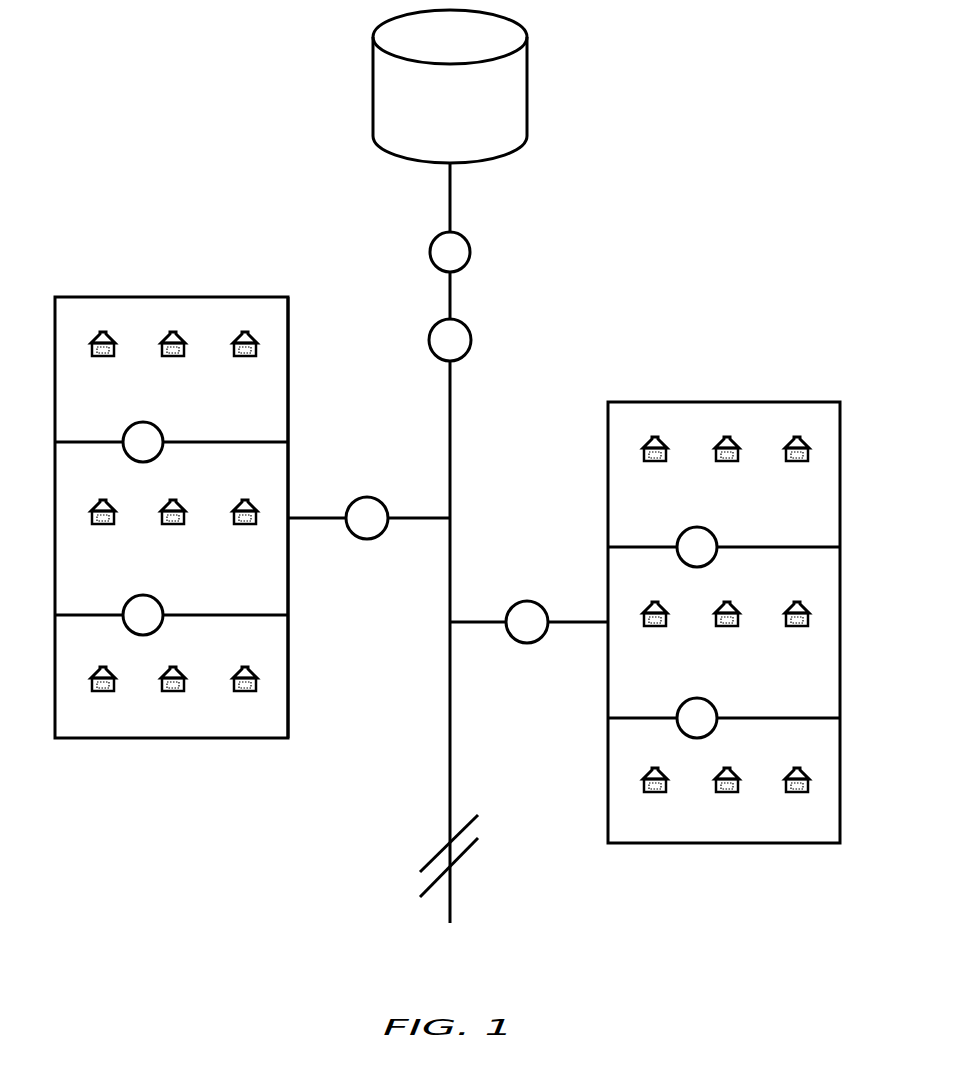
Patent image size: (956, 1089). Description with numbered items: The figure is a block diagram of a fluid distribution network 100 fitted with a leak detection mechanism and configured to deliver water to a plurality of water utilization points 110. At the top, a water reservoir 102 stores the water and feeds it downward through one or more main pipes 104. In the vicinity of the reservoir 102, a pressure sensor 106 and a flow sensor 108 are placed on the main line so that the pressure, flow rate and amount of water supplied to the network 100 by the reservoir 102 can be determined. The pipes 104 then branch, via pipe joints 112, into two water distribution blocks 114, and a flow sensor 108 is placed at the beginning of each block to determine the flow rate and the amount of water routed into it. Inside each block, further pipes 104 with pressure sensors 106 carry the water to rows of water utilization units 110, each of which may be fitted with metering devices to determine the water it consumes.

The fluid distribution network 100 is at (168, 122).
The water reservoir 102 is at (527, 88).
The pipes 104 is at (450, 210).
The pressure sensors 106 is at (470, 250).
The flow sensors 108 is at (470, 340).
The water utilization points 110 is at (110, 357).
The pipe joints 112 is at (288, 297).
The water distribution blocks 114 is at (88, 787).